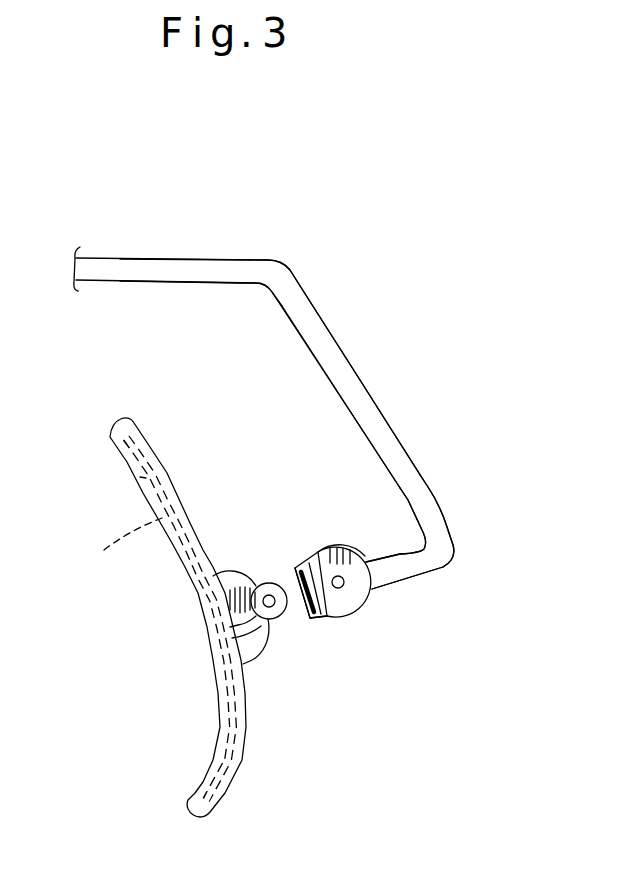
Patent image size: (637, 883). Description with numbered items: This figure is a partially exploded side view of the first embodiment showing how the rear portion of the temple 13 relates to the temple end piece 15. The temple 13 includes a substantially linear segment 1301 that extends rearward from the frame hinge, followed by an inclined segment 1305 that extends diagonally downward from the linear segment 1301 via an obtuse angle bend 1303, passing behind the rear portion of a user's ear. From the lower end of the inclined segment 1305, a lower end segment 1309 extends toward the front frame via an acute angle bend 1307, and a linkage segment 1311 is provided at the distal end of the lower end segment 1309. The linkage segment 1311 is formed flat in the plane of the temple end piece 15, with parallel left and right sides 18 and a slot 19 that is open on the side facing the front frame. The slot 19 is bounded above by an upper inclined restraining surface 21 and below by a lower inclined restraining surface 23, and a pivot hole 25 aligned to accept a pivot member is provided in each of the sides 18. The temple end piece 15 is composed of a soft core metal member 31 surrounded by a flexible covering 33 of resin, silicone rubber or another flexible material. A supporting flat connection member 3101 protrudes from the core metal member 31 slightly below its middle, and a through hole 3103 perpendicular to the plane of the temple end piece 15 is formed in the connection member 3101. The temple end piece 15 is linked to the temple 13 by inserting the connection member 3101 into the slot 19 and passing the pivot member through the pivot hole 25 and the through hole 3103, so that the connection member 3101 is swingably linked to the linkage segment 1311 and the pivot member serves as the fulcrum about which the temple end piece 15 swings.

The temple 13 is at (110, 258).
The linear segment 1301 is at (157, 258).
The obtuse angle bend 1303 is at (277, 262).
The inclined segment 1305 is at (368, 390).
The acute angle bend 1307 is at (451, 557).
The lower end segment 1309 is at (407, 562).
The linkage segment 1311 is at (330, 547).
The temple end piece 15 is at (157, 446).
The flexible covering 33 is at (140, 477).
The core metal member 31 is at (113, 542).
The through hole 3103 is at (228, 577).
The connection member 3101 is at (250, 660).
The upper inclined restraining surface 21 is at (307, 552).
The pivot hole 25 is at (348, 568).
The slot 19 is at (306, 622).
The lower inclined restraining surface 23 is at (320, 622).
The left and right sides 18 is at (352, 597).